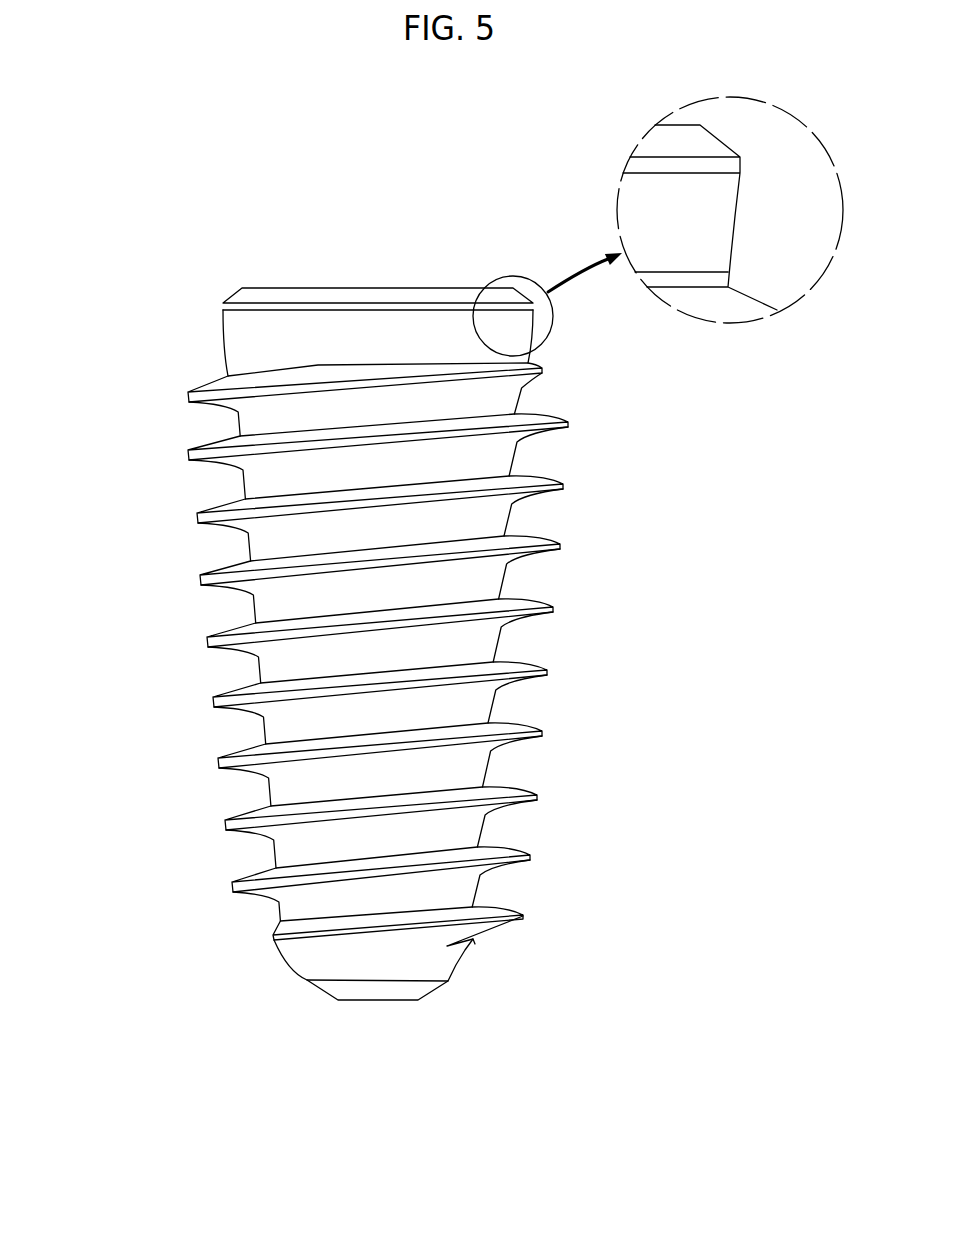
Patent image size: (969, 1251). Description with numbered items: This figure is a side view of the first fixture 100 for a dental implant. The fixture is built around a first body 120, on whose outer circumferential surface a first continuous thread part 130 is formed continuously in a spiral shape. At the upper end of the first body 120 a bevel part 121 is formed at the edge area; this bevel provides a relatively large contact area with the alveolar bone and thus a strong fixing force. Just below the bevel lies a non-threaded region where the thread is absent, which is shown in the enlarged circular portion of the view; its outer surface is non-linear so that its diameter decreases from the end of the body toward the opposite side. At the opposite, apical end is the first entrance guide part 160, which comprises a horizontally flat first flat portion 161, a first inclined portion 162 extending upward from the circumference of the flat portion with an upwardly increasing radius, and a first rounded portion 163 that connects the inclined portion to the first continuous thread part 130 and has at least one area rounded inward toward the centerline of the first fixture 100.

The first fixture 100 is at (150, 262).
The bevel part 121 is at (242, 288).
The first body 120 is at (252, 483).
The first continuous thread part 130 is at (185, 600).
The first entrance guide part 160 is at (483, 1086).
The first flat portion 161 is at (378, 1000).
The first inclined portion 162 is at (432, 1000).
The first rounded portion 163 is at (467, 950).